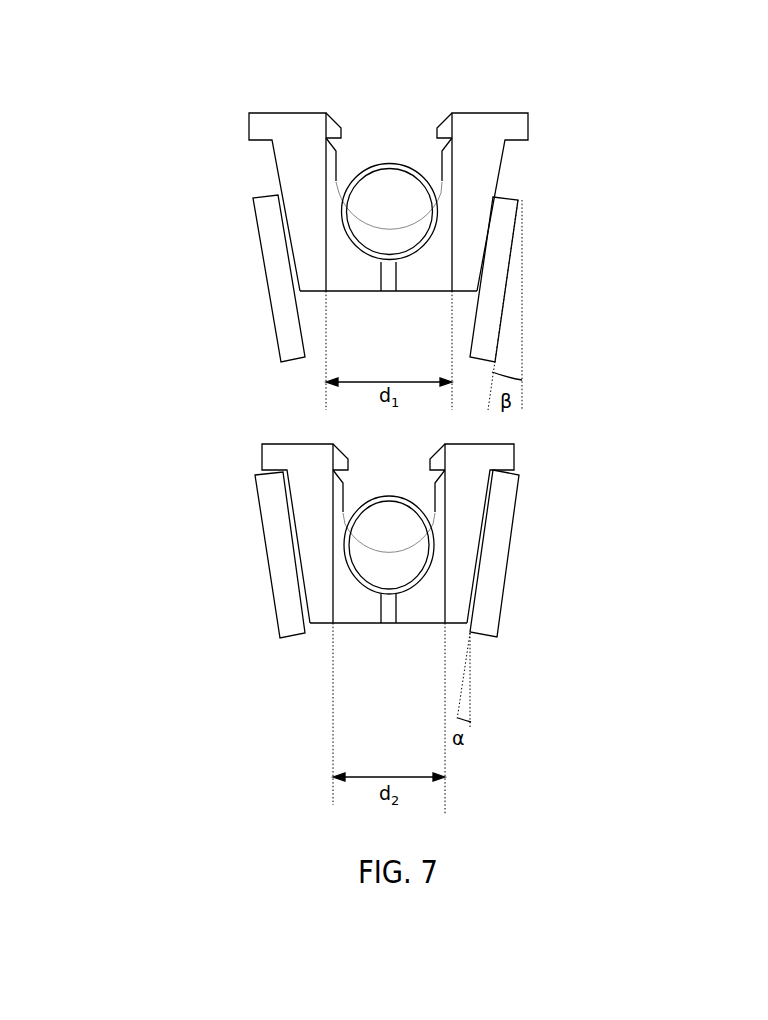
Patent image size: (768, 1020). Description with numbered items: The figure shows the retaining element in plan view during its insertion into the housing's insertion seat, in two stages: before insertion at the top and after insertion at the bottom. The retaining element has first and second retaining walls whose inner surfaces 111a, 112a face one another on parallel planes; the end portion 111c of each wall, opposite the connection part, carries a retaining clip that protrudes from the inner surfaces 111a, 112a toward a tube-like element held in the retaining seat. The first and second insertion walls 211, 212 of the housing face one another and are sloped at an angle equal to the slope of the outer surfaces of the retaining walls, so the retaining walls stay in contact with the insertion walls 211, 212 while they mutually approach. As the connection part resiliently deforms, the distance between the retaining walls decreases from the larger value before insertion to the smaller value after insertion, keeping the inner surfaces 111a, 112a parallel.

The inner surface of first retaining wall 111a is at (337, 182).
The inner surface of second retaining wall 112a is at (444, 177).
The end portion of first retaining wall 111c is at (292, 148).
The first insertion wall 211 is at (280, 503).
The second insertion wall 212 is at (502, 507).